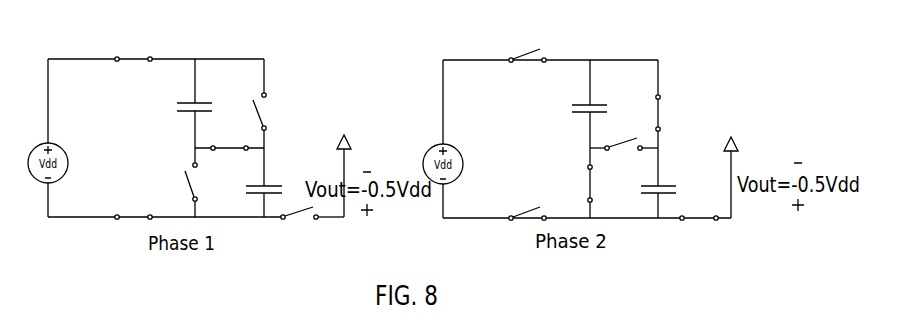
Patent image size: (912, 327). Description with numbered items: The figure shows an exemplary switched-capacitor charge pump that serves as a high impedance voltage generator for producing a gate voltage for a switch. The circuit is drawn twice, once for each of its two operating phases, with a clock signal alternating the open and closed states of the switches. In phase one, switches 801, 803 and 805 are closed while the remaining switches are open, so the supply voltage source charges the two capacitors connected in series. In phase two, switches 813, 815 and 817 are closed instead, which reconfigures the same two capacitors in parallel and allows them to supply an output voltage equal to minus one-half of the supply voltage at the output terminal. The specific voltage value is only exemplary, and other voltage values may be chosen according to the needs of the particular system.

The switch 801 is at (134, 57).
The switch 803 is at (130, 221).
The switch 805 is at (220, 150).
The switch 813 is at (590, 174).
The switch 815 is at (699, 221).
The switch 817 is at (659, 108).